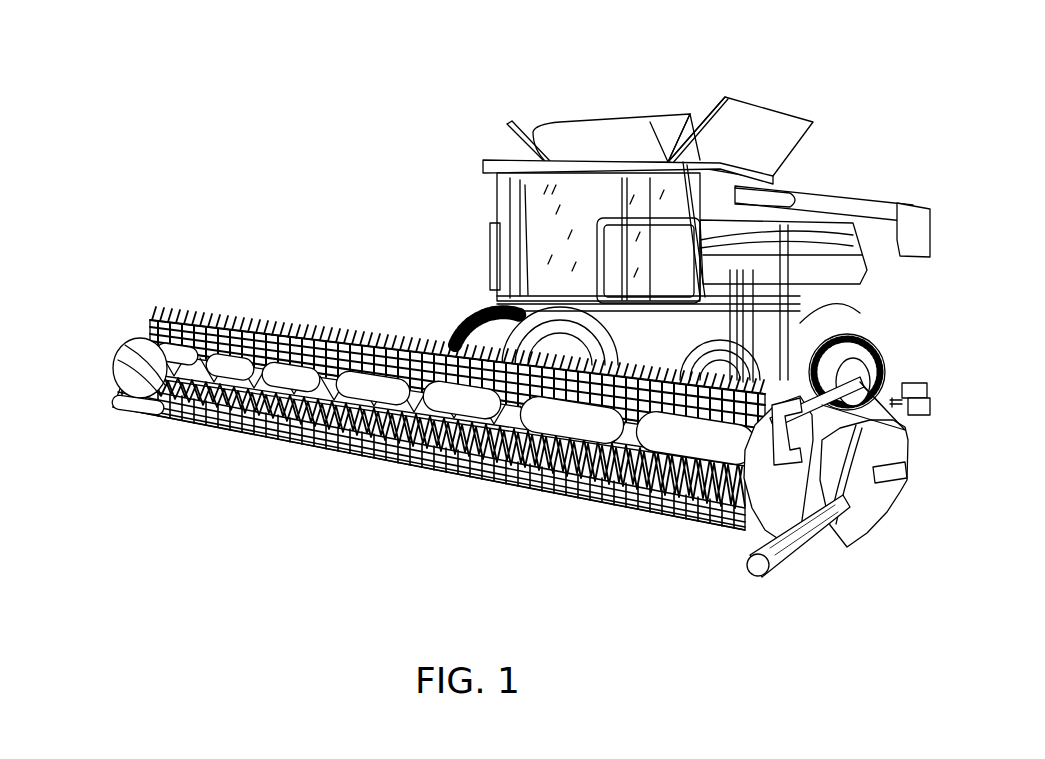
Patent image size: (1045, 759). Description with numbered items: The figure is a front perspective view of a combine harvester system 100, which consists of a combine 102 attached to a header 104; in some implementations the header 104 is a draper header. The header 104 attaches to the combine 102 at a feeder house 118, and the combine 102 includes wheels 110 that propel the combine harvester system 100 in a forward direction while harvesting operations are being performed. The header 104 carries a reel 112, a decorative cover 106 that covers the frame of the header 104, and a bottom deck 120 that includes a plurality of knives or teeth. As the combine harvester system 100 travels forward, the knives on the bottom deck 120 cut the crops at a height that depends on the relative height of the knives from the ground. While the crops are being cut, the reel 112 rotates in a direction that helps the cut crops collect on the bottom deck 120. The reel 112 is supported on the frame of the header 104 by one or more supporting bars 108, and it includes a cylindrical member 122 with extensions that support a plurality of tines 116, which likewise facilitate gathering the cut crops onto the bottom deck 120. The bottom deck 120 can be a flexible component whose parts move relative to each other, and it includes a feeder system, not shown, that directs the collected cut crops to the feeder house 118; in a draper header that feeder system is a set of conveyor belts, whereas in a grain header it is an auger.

The combine harvester system 100 is at (492, 317).
The combine 102 is at (670, 253).
The header 104 is at (492, 433).
The decorative cover 106 is at (893, 507).
The supporting bars 108 is at (880, 376).
The wheels 110 is at (463, 300).
The reel 112 is at (760, 545).
The tines 116 is at (157, 312).
The feeder house 118 is at (453, 355).
The bottom deck 120 is at (670, 527).
The cylindrical member 122 is at (240, 318).